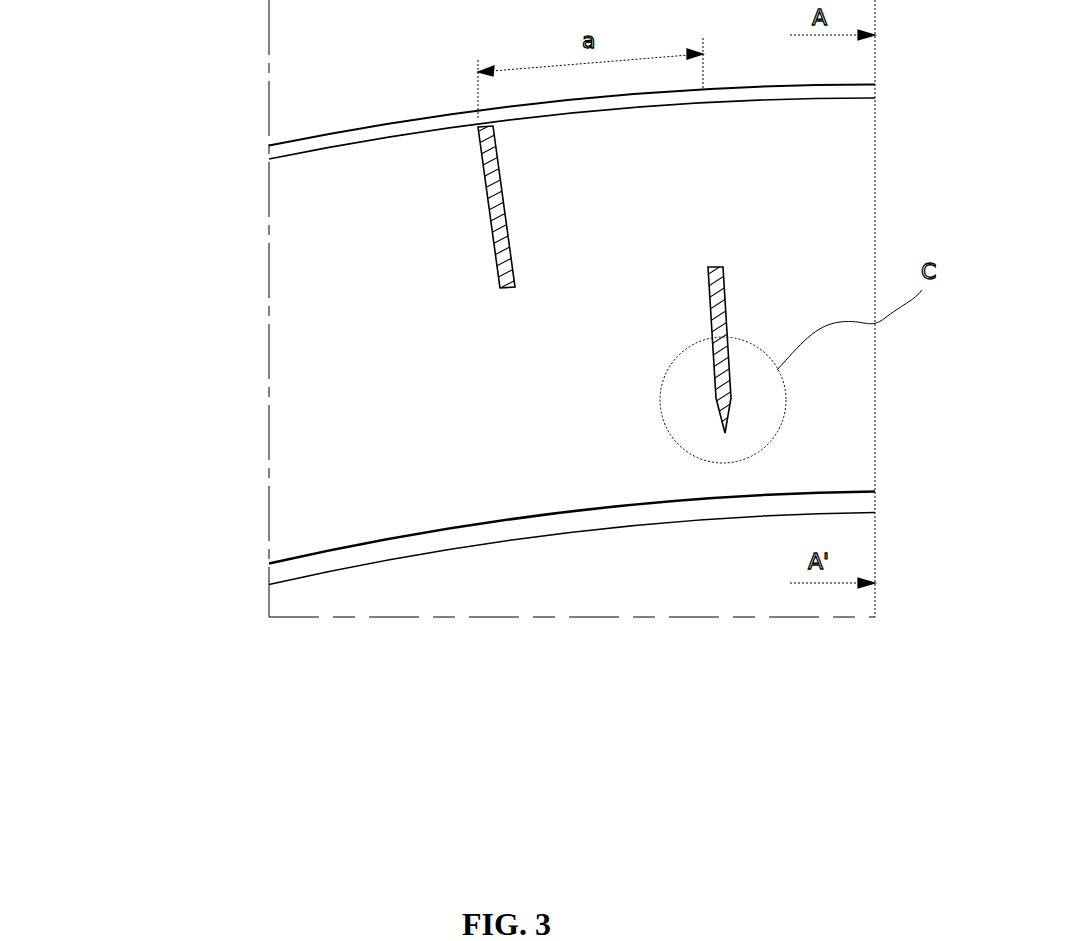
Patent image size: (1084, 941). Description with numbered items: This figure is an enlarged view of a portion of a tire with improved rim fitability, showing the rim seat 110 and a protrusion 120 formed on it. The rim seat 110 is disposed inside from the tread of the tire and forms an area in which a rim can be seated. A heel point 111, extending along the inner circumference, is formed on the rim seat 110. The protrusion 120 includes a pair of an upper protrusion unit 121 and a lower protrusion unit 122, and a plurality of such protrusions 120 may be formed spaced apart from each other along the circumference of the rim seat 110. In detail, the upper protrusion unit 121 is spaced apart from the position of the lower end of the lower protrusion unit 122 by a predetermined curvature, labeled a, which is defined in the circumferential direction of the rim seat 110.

The rim seat 110 is at (303, 372).
The heel point 111 is at (269, 584).
The protrusion 120 is at (604, 438).
The upper protrusion unit 121 is at (505, 290).
The lower protrusion unit 122 is at (722, 440).